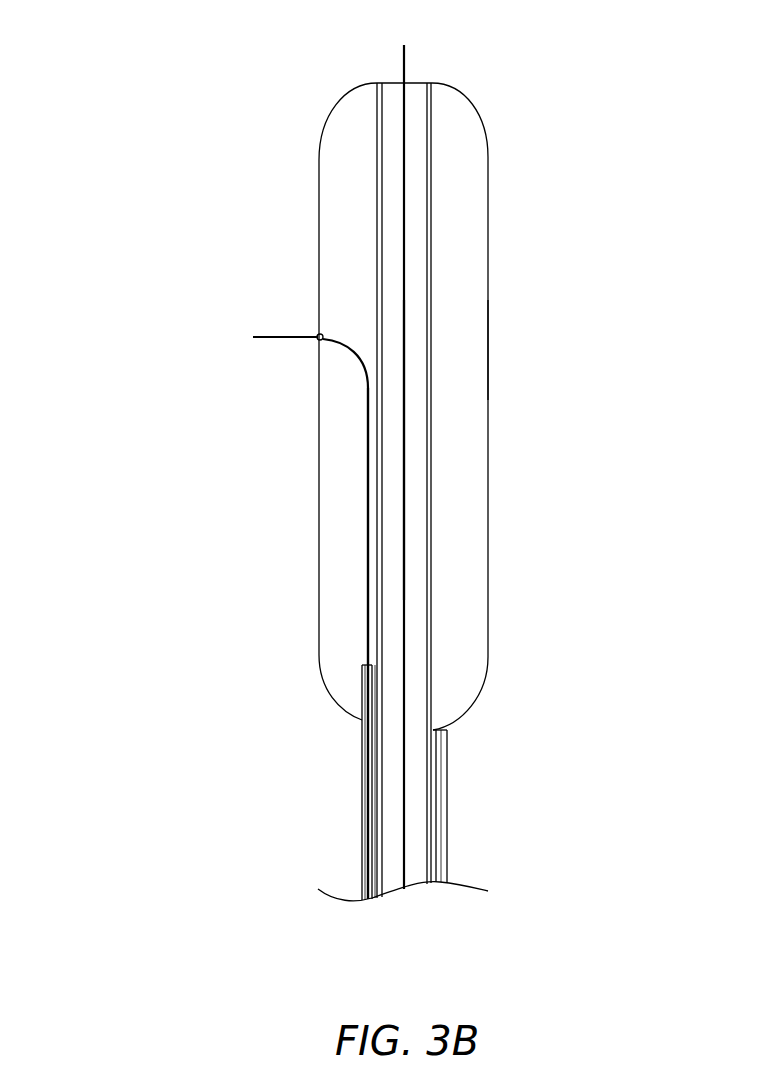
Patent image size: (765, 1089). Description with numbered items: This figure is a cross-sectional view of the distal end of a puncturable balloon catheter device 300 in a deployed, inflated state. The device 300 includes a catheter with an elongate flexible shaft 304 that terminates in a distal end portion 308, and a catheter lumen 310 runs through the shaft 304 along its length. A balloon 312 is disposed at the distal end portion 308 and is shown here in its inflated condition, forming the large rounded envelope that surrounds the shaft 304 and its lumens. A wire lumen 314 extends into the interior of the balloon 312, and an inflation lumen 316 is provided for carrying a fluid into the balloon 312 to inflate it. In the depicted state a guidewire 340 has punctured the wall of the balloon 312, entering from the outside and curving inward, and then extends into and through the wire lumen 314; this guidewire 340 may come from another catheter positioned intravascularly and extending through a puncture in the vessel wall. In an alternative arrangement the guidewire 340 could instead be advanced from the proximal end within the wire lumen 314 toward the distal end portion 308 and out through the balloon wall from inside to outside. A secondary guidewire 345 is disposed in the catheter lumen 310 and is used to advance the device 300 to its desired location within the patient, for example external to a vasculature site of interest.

The puncturable balloon catheter device 300 is at (178, 58).
The elongate flexible shaft 304 is at (429, 186).
The distal end portion 308 is at (555, 346).
The catheter lumen 310 is at (418, 472).
The balloon 312 is at (348, 207).
The wire lumen 314 is at (362, 797).
The inflation lumen 316 is at (443, 795).
The guidewire 340 is at (367, 497).
The secondary guidewire 345 is at (404, 273).